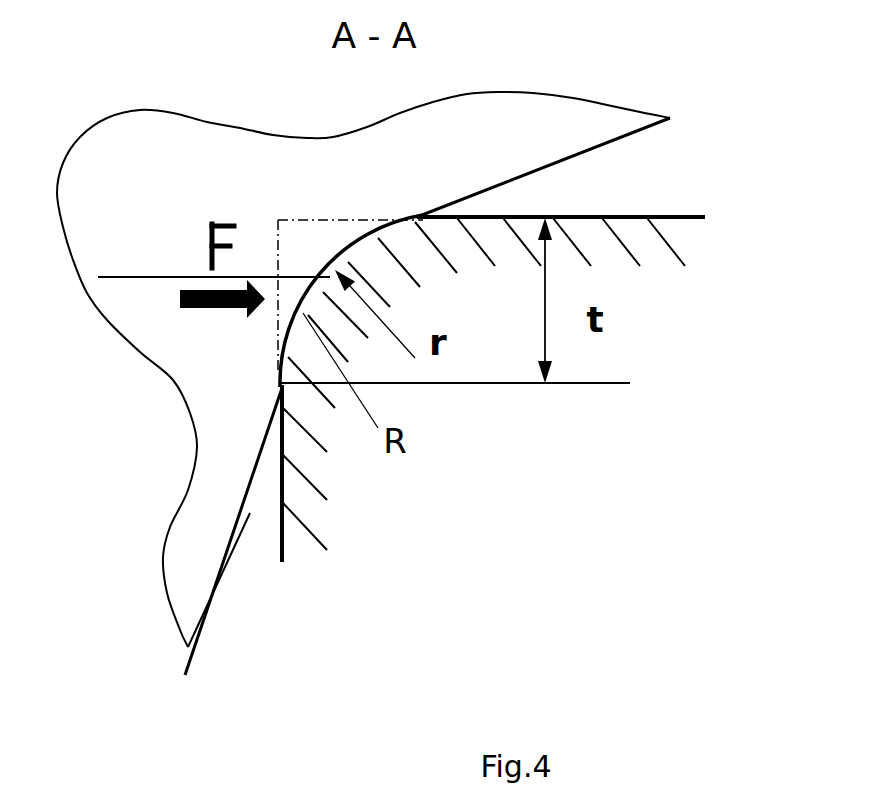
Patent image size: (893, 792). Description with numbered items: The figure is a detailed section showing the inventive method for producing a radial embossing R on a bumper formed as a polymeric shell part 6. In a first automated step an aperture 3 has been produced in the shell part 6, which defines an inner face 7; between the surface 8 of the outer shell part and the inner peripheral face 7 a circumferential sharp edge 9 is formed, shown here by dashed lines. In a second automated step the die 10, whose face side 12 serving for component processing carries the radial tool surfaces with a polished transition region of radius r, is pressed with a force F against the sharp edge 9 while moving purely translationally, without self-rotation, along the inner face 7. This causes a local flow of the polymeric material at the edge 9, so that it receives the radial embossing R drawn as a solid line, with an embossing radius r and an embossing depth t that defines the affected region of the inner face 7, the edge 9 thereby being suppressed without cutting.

The aperture 3 is at (248, 515).
The shell part 6 is at (405, 522).
The inner face 7 is at (223, 555).
The surface of outer shell part 8 is at (632, 217).
The edge 9 is at (278, 220).
The die 10 is at (150, 220).
The face side 12 is at (557, 175).